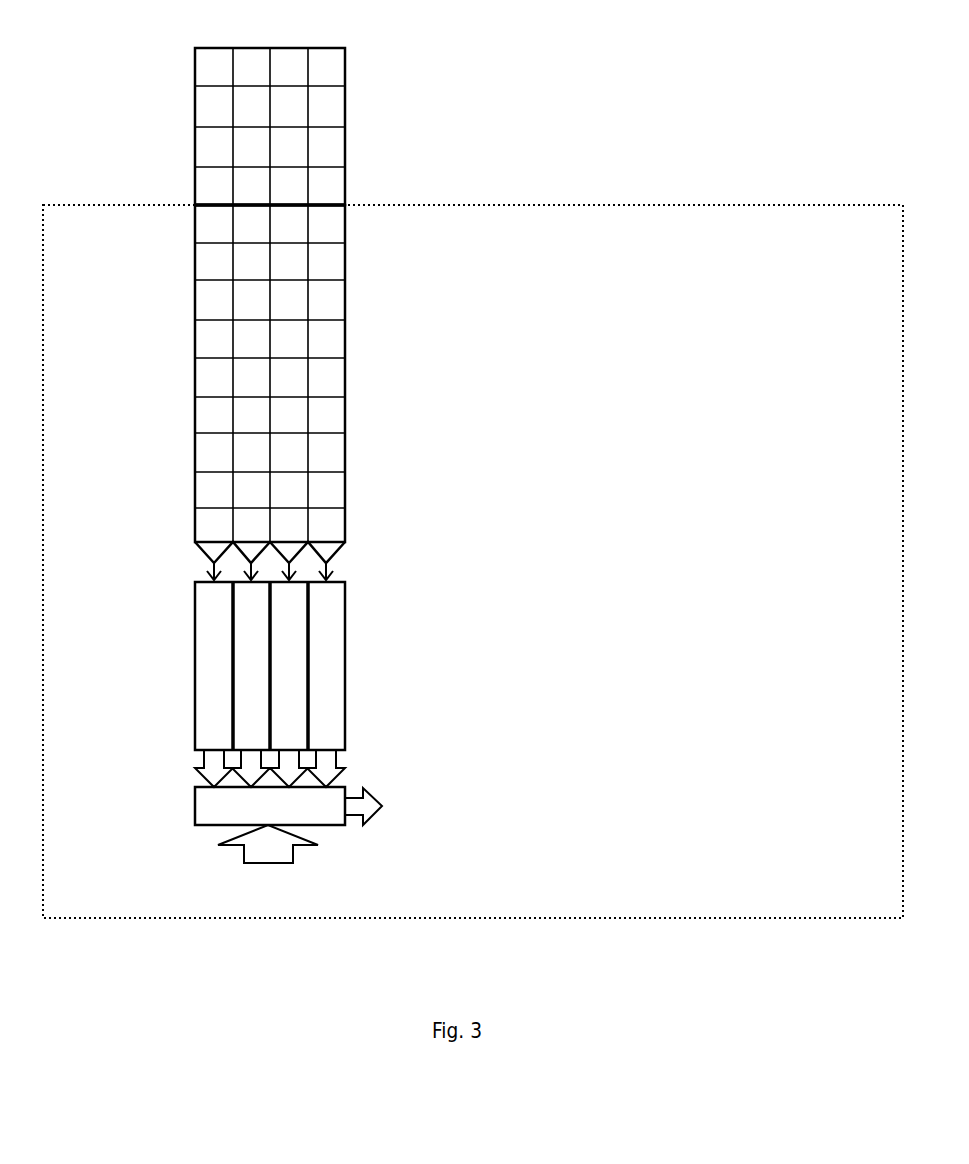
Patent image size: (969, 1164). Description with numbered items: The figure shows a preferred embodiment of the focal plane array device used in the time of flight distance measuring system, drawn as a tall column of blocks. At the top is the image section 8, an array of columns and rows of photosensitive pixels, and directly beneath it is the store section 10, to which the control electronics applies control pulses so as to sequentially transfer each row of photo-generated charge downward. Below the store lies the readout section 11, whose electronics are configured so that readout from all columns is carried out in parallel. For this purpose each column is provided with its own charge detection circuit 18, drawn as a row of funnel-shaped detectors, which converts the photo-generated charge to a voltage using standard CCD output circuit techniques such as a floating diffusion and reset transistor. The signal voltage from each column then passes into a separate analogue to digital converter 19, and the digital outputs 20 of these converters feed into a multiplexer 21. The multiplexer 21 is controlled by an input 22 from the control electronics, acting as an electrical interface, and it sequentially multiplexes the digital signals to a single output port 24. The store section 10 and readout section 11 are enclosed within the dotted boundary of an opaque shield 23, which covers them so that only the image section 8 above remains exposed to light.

The image section 8 is at (195, 48).
The store section 10 is at (195, 207).
The readout section 11 is at (687, 548).
The charge detection circuit 18 is at (337, 552).
The analogue to digital converter 19 is at (345, 667).
The digital outputs 20 is at (195, 770).
The multiplexer 21 is at (195, 807).
The input 22 is at (268, 859).
The opaque shield 23 is at (663, 215).
The output port 24 is at (363, 825).